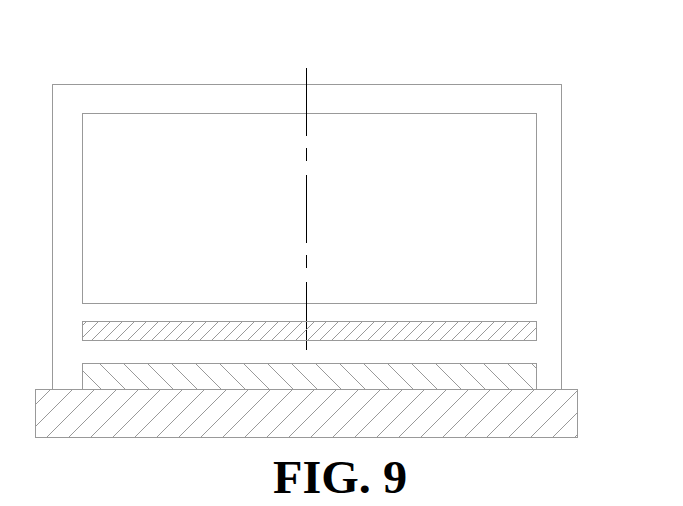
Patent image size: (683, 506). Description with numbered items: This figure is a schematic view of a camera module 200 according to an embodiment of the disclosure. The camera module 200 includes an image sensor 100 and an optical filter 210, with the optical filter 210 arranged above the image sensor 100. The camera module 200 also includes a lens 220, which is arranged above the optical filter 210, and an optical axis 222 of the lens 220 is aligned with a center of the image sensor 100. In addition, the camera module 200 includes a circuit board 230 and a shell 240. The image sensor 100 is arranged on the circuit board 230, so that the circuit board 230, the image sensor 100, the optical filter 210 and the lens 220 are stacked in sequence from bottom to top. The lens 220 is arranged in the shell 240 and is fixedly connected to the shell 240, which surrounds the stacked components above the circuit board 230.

The camera module 200 is at (65, 60).
The shell 240 is at (562, 163).
The lens 220 is at (495, 112).
The optical axis 222 is at (307, 100).
The optical filter 210 is at (495, 328).
The image sensor 100 is at (517, 378).
The circuit board 230 is at (556, 416).